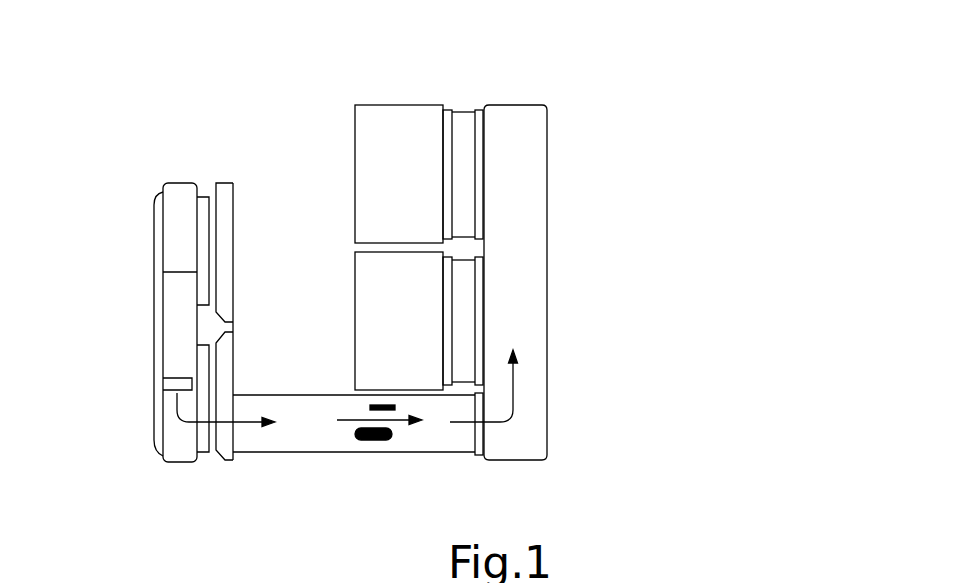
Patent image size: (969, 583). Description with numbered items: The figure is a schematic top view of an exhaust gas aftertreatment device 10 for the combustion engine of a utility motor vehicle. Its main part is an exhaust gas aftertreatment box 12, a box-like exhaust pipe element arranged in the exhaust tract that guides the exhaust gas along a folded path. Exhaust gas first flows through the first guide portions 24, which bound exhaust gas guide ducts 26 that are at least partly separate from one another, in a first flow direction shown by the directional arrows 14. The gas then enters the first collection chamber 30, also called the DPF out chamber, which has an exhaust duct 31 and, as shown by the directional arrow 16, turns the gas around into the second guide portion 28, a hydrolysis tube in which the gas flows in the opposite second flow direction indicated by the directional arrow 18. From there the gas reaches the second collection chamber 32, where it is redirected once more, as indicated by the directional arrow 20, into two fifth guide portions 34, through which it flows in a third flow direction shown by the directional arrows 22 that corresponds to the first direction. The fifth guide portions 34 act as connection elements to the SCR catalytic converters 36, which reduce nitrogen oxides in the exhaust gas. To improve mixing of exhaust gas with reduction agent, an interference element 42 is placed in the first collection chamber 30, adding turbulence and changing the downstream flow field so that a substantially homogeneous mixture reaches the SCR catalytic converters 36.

The exhaust gas aftertreatment device 10 is at (565, 91).
The exhaust gas aftertreatment box 12 is at (571, 191).
The directional arrows 14 is at (225, 252).
The directional arrow 16 is at (253, 425).
The directional arrow 18 is at (389, 452).
The directional arrow 20 is at (517, 393).
The directional arrows 22 is at (510, 175).
The first guide portions 24 is at (229, 183).
The exhaust gas guide ducts 26 is at (226, 201).
The second guide portion 28 is at (316, 452).
The first collection chamber 30 is at (155, 236).
The exhaust duct 31 is at (180, 262).
The second collection chamber 32 is at (547, 310).
The fifth guide portions 34 is at (466, 112).
The SCR catalytic converters 36 is at (372, 105).
The interference element 42 is at (170, 362).